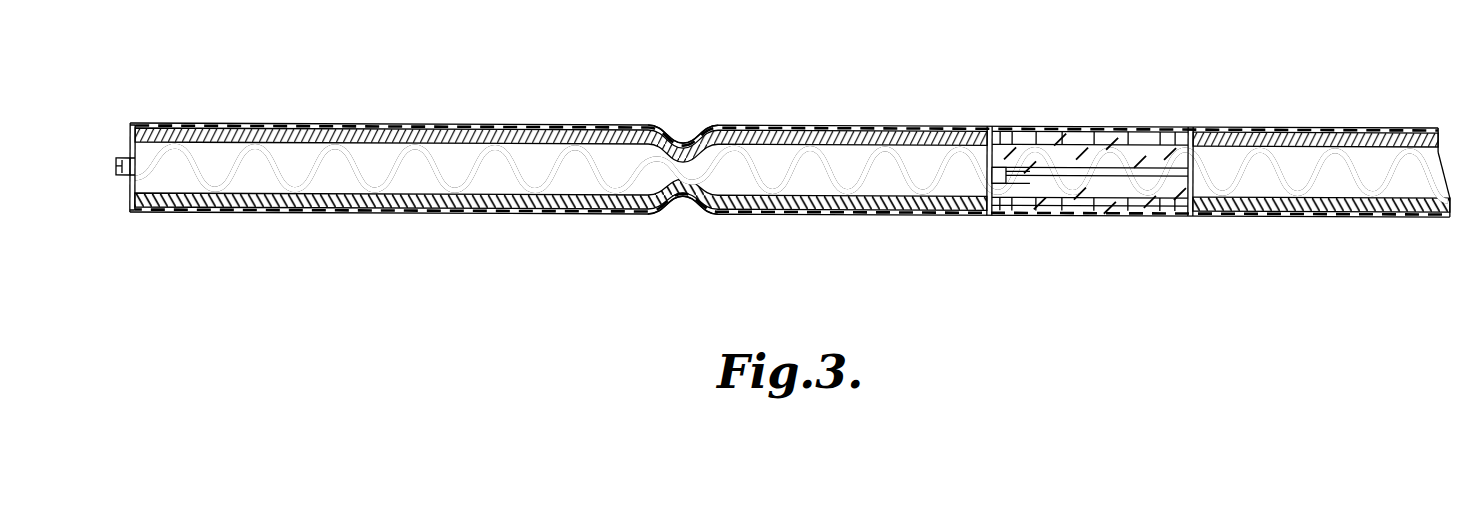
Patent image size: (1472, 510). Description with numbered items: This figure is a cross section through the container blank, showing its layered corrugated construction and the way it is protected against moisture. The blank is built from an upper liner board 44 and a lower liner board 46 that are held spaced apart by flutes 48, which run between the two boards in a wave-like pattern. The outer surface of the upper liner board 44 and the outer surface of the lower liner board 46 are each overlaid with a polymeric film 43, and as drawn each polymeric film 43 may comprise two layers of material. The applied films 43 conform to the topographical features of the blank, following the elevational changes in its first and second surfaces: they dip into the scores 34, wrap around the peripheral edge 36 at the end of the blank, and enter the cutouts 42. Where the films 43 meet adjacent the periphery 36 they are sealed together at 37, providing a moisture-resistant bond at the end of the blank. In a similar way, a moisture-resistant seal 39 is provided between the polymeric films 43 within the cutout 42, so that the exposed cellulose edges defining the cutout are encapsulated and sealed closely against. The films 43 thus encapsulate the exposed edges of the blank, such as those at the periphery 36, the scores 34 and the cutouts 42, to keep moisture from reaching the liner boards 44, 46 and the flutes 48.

The score 34 is at (694, 129).
The peripheral edge 36 is at (123, 132).
The seal 37 is at (119, 179).
The moisture-resistant seal 39 is at (1003, 186).
The cutout 42 is at (1114, 120).
The polymeric film 43 is at (420, 123).
The upper liner board 44 is at (152, 130).
The lower liner board 46 is at (176, 202).
The flutes 48 is at (365, 145).